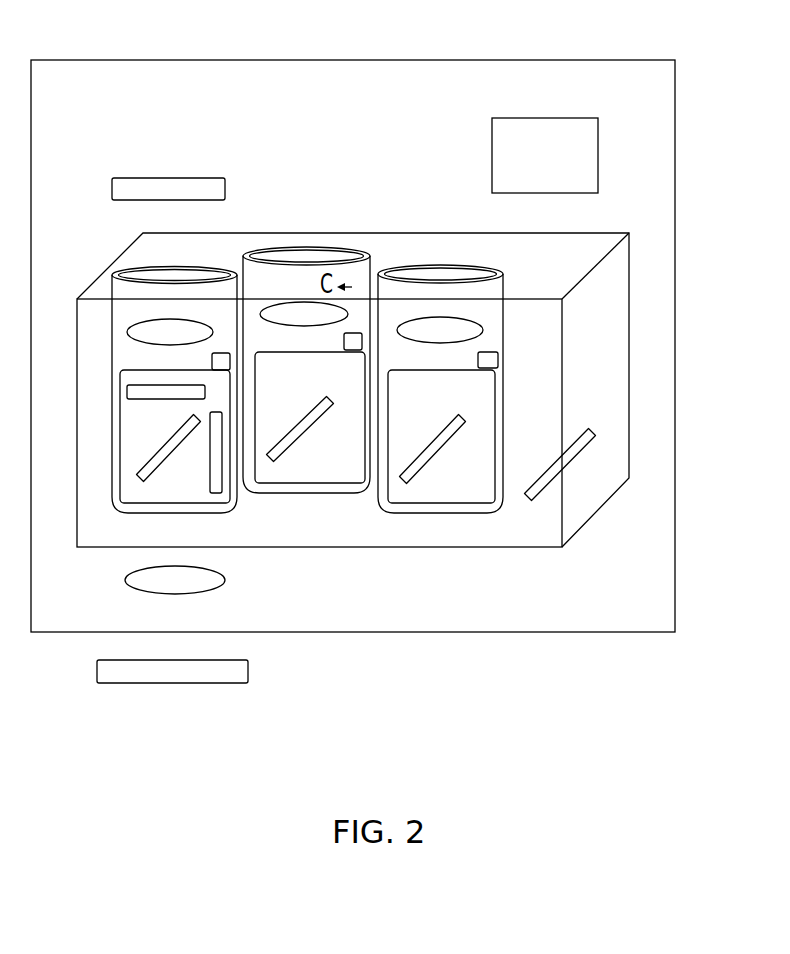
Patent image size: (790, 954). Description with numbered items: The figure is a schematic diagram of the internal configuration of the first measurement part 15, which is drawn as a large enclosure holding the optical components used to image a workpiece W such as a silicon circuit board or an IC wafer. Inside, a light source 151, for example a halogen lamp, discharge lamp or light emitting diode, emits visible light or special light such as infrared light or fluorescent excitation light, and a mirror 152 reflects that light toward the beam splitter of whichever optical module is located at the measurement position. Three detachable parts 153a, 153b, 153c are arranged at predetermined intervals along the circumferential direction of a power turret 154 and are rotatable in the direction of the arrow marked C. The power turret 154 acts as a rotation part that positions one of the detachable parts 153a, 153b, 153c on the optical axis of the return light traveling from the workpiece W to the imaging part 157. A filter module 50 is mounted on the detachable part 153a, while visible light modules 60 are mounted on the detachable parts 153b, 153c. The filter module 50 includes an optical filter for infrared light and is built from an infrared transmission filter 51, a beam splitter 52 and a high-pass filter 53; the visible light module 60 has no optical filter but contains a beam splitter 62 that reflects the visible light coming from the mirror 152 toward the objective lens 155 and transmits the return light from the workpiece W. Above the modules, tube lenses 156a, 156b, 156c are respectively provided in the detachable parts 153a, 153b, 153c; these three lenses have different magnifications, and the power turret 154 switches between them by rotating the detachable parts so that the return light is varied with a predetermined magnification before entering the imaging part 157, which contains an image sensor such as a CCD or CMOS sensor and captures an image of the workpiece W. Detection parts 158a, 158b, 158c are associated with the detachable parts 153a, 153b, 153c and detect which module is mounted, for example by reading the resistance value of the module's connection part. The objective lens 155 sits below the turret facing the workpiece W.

The first measurement part 15 is at (353, 316).
The light source 151 is at (558, 130).
The mirror 152 is at (577, 498).
The detachable part 153a is at (153, 244).
The detachable part 153b is at (306, 221).
The detachable part 153c is at (441, 238).
The power turret 154 is at (410, 390).
The objective lens 155 is at (212, 596).
The tube lens 156a is at (123, 301).
The tube lens 156b is at (301, 251).
The tube lens 156c is at (439, 268).
The imaging part 157 is at (168, 158).
The detection part 158a is at (244, 252).
The detection part 158b is at (378, 242).
The detection part 158c is at (550, 355).
The filter module 50 is at (154, 441).
The infrared transmission filter 51 is at (261, 526).
The beam splitter 52 is at (136, 436).
The high-pass filter 53 is at (132, 419).
The visible light module 60 is at (373, 431).
The beam splitter 62 is at (301, 502).
The workpiece W is at (172, 714).